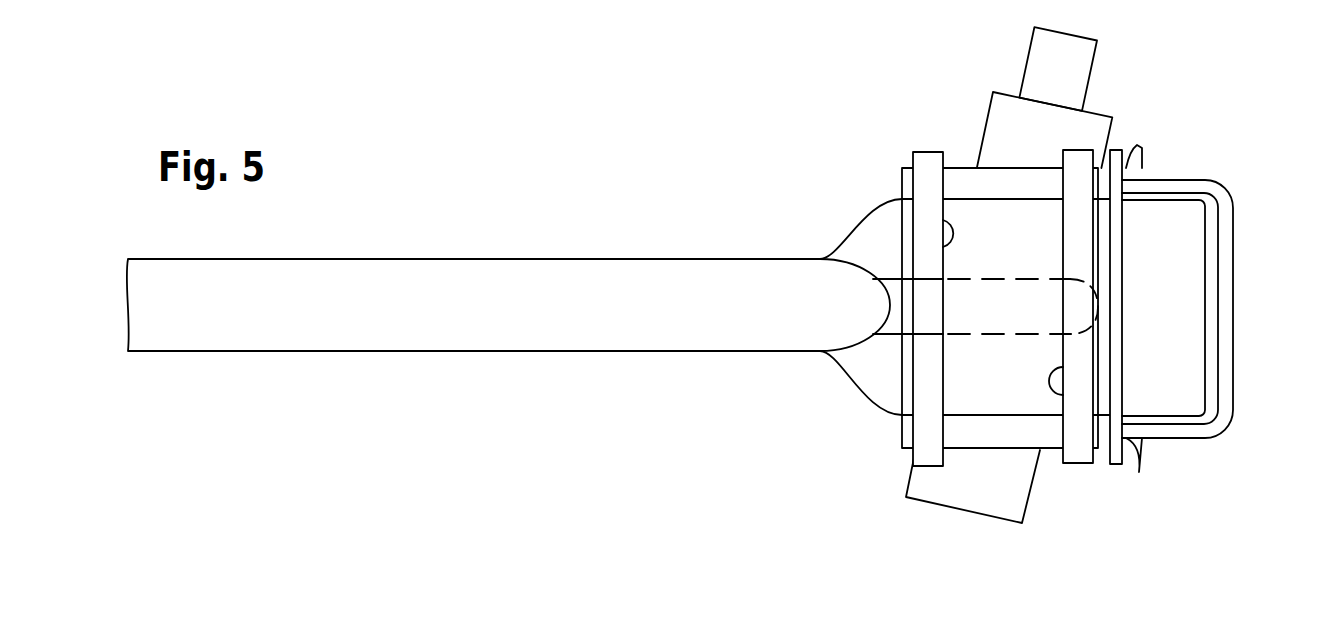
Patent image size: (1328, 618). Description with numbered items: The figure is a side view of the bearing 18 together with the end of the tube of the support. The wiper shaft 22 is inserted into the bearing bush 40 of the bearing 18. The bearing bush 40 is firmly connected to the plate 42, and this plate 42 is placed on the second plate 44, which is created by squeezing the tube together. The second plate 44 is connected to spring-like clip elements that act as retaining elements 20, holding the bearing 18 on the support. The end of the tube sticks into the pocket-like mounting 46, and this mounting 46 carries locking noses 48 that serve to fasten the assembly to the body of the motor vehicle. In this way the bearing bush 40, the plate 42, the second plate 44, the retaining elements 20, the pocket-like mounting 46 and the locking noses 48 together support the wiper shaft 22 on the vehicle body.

The bearing 18 is at (958, 123).
The retaining elements 20 is at (928, 450).
The wiper shaft 22 is at (1082, 58).
The bearing bush 40 is at (1083, 125).
The plate 42 is at (1047, 428).
The second plate 44 is at (870, 378).
The pocket-like mounting 46 is at (1225, 230).
The locking noses 48 is at (1142, 148).